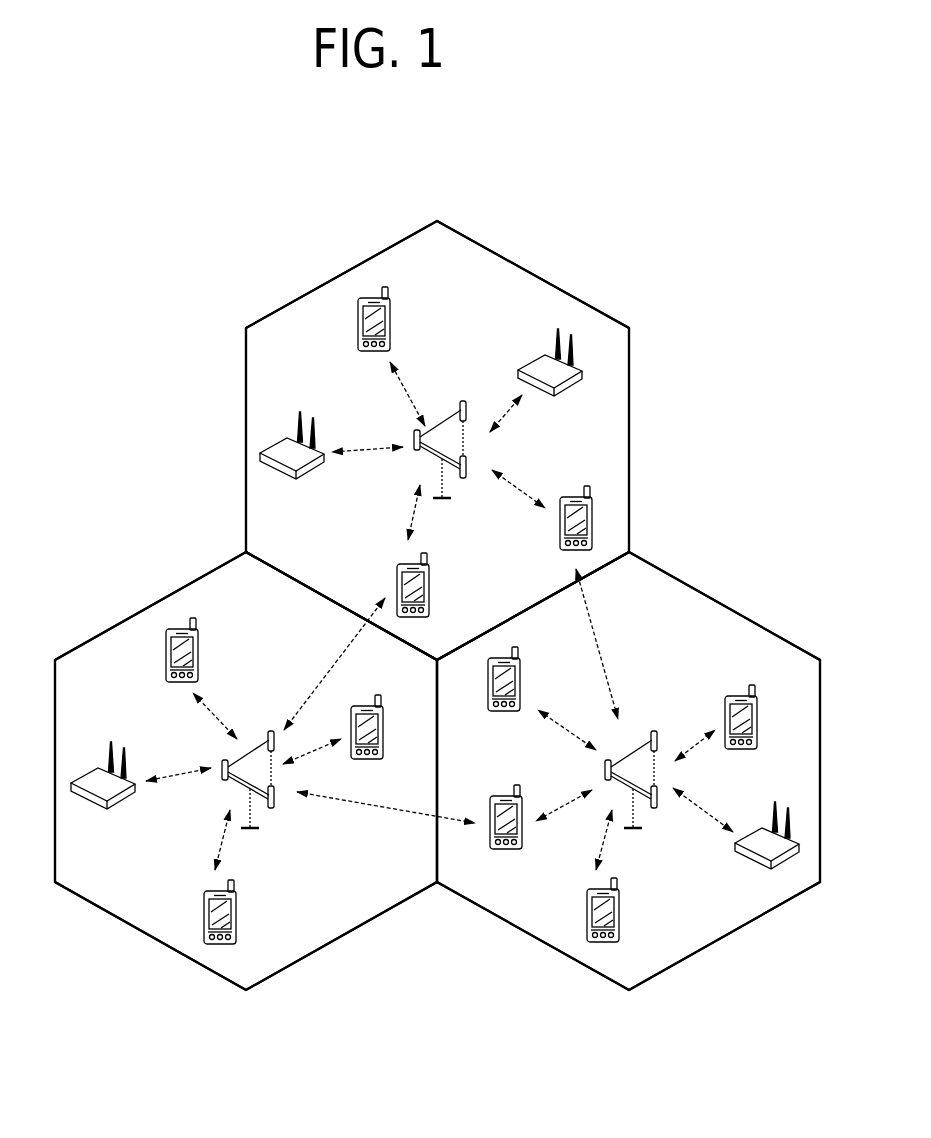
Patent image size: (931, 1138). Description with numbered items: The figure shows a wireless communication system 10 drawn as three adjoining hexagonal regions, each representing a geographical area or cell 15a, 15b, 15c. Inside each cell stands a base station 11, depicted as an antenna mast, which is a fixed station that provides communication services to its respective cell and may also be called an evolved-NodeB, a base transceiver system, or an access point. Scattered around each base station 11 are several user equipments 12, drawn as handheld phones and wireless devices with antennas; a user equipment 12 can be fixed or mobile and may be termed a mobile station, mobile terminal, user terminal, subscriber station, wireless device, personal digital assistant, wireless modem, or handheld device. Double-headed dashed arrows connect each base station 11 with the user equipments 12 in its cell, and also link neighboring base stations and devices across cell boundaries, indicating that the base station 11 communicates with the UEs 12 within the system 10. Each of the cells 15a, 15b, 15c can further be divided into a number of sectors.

The wireless communication system 10 is at (708, 336).
The base station 11 is at (459, 404).
The user equipment 12 is at (392, 322).
The cell 15a is at (630, 428).
The cell 15b is at (742, 614).
The cell 15c is at (124, 620).